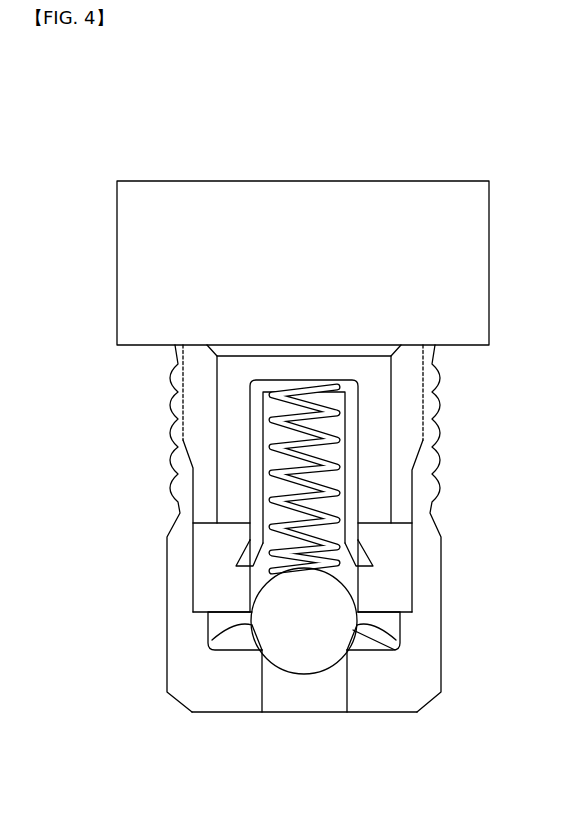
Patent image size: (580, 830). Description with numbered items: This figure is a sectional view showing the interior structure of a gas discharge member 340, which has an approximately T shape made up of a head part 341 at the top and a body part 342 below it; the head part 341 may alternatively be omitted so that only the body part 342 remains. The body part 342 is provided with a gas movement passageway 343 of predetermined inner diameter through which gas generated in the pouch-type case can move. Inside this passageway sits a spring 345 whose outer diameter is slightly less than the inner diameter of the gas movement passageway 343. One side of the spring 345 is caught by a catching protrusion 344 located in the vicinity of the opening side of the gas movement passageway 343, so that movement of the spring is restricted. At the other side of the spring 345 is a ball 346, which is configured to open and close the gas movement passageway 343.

The gas discharge member 340 is at (321, 121).
The head part 341 is at (137, 279).
The body part 342 is at (167, 577).
The gas movement passageway 343 is at (329, 700).
The catching protrusion 344 is at (350, 378).
The spring 345 is at (340, 487).
The ball 346 is at (413, 712).